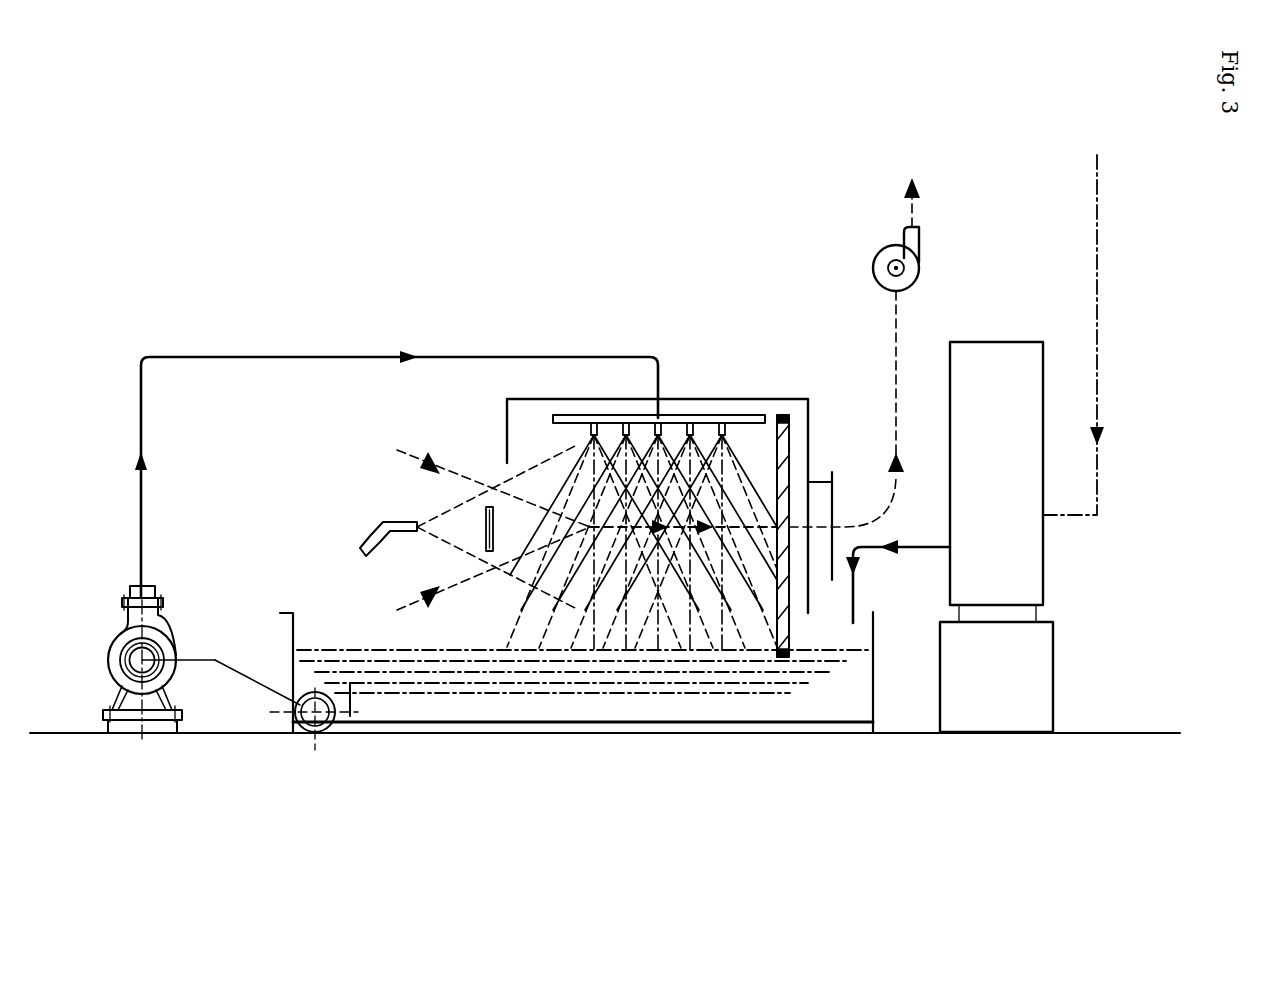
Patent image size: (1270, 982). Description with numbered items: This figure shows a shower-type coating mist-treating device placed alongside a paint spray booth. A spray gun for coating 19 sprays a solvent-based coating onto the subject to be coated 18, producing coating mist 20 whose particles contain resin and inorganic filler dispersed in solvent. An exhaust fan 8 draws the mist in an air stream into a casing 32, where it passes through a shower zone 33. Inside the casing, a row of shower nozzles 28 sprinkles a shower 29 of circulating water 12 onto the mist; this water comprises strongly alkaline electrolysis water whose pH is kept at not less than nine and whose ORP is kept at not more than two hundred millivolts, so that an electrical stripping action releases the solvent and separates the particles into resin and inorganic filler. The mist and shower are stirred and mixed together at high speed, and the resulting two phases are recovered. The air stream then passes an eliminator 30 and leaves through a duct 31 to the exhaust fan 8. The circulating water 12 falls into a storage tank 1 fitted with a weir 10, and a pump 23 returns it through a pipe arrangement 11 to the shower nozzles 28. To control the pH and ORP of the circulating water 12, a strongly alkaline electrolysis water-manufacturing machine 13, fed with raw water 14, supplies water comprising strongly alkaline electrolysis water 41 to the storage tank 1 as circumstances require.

The storage tank 1 is at (655, 718).
The exhaust fan 8 is at (878, 258).
The weir 10 is at (353, 715).
The pipe arrangement 11 is at (298, 356).
The circulating water 12 is at (475, 675).
The strongly alkaline electrolysis water-manufacturing machine 13 is at (1023, 565).
The raw water 14 is at (1087, 177).
The subject to be coated 18 is at (482, 505).
The spray gun for coating 19 is at (372, 538).
The coating mist 20 is at (498, 477).
The pump 23 is at (120, 638).
The shower nozzle 28 is at (650, 422).
The shower 29 is at (573, 463).
The eliminator 30 is at (783, 418).
The duct 31 is at (896, 333).
The casing 32 is at (706, 397).
The shower zone 33 is at (668, 593).
The water comprising strongly alkaline electrolysis water 41 is at (926, 547).